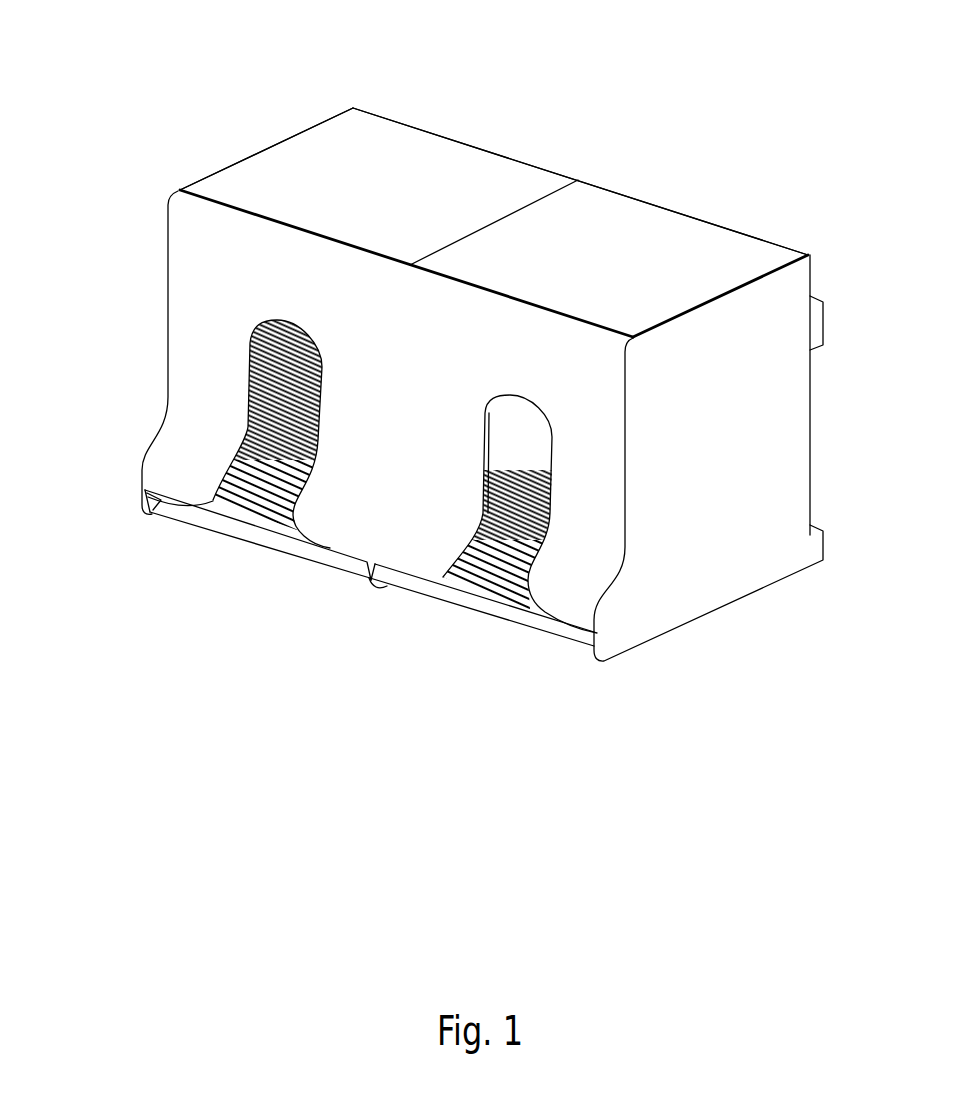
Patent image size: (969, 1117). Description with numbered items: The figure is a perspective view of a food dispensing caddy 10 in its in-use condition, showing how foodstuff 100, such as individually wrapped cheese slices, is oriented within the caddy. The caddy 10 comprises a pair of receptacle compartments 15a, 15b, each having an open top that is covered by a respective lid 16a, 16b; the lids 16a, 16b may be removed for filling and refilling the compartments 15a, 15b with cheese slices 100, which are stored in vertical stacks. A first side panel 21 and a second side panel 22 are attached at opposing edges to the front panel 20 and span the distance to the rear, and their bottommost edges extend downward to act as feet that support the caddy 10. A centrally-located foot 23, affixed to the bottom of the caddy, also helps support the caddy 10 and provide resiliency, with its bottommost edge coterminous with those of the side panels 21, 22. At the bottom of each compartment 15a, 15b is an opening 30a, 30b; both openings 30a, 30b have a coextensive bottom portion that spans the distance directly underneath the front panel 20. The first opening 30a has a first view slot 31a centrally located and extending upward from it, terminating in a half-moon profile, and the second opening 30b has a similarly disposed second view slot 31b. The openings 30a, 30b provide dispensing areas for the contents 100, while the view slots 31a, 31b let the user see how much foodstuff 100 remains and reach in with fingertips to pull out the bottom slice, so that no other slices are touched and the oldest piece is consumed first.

The food dispensing caddy 10 is at (265, 104).
The first receptacle compartment 15a is at (427, 164).
The second receptacle compartment 15b is at (650, 224).
The first lid 16a is at (338, 143).
The second lid 16b is at (718, 250).
The front panel 20 is at (178, 257).
The first side panel 21 is at (148, 517).
The second side panel 22 is at (598, 662).
The foot 23 is at (375, 583).
The first opening 30a is at (252, 527).
The second opening 30b is at (488, 600).
The first view slot 31a is at (255, 327).
The second view slot 31b is at (515, 406).
The foodstuff 100 is at (250, 402).